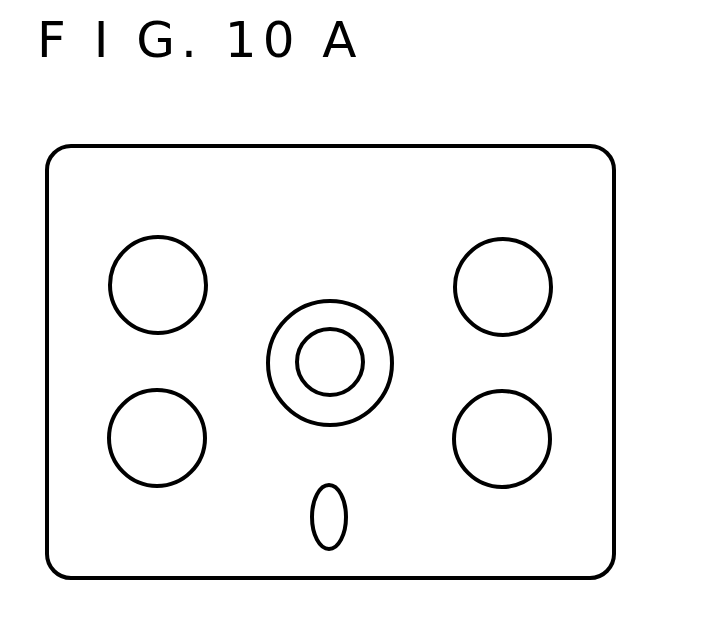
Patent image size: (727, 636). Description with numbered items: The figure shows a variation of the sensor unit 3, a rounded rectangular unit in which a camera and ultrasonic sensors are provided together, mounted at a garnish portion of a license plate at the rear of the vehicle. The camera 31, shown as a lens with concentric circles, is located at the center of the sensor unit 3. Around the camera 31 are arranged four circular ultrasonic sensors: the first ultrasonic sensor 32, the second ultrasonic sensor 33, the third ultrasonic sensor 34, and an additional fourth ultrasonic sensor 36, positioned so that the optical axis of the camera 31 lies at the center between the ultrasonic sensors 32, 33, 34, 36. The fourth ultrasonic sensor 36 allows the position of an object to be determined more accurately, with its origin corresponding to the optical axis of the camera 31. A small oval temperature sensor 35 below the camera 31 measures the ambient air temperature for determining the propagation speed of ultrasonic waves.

The sensor unit 3 is at (575, 163).
The camera 31 is at (343, 313).
The first ultrasonic sensor 32 is at (155, 403).
The second ultrasonic sensor 33 is at (153, 253).
The third ultrasonic sensor 34 is at (502, 407).
The temperature sensor 35 is at (342, 508).
The fourth ultrasonic sensor 36 is at (503, 253).